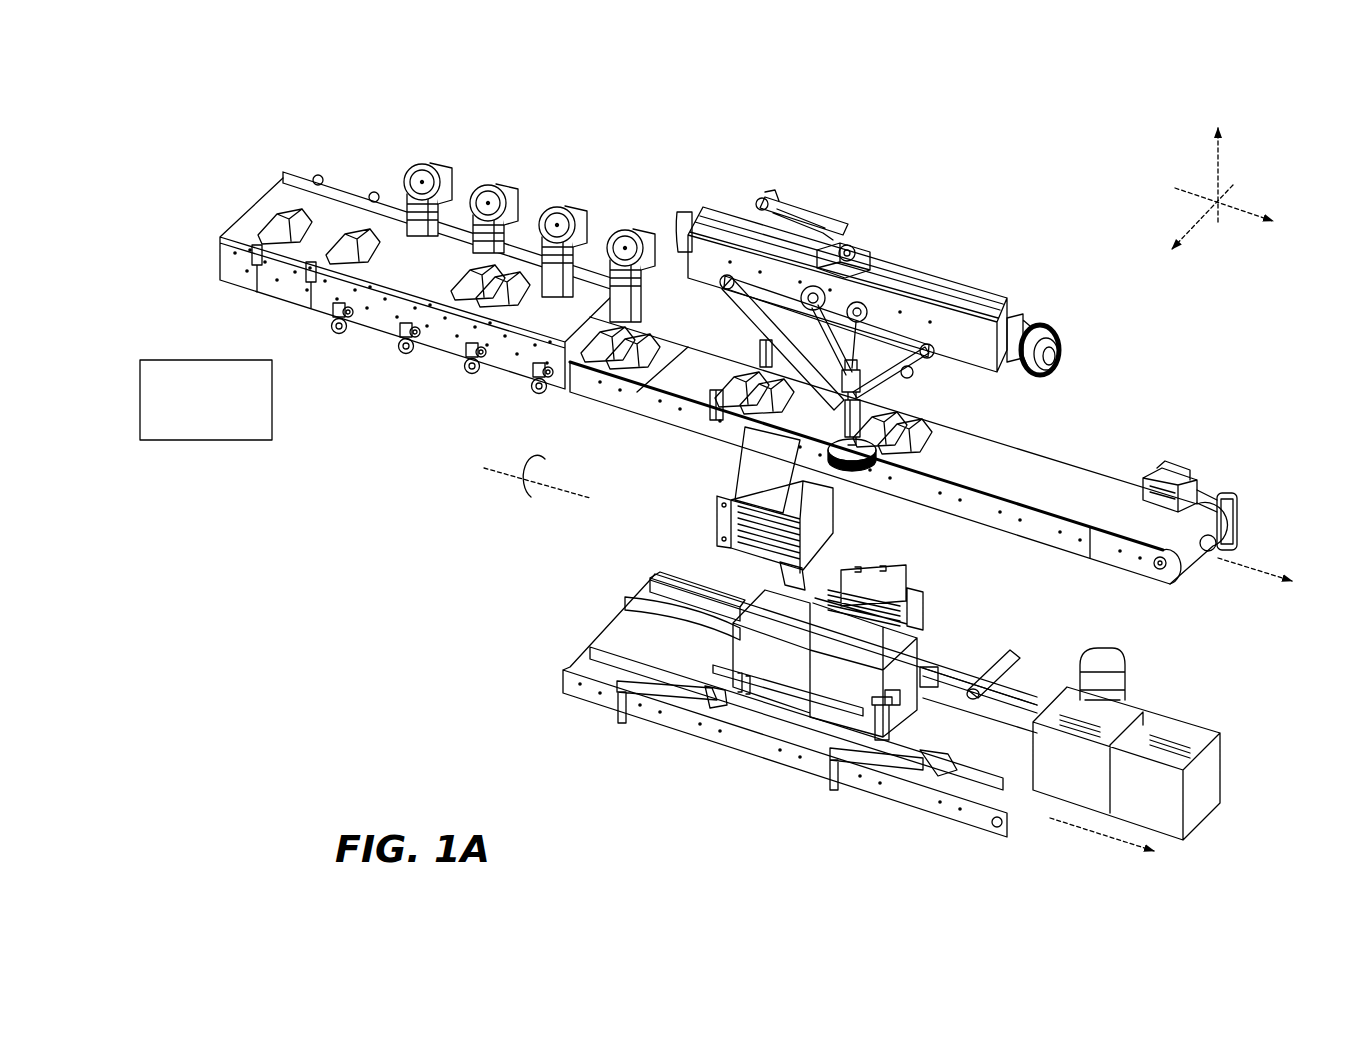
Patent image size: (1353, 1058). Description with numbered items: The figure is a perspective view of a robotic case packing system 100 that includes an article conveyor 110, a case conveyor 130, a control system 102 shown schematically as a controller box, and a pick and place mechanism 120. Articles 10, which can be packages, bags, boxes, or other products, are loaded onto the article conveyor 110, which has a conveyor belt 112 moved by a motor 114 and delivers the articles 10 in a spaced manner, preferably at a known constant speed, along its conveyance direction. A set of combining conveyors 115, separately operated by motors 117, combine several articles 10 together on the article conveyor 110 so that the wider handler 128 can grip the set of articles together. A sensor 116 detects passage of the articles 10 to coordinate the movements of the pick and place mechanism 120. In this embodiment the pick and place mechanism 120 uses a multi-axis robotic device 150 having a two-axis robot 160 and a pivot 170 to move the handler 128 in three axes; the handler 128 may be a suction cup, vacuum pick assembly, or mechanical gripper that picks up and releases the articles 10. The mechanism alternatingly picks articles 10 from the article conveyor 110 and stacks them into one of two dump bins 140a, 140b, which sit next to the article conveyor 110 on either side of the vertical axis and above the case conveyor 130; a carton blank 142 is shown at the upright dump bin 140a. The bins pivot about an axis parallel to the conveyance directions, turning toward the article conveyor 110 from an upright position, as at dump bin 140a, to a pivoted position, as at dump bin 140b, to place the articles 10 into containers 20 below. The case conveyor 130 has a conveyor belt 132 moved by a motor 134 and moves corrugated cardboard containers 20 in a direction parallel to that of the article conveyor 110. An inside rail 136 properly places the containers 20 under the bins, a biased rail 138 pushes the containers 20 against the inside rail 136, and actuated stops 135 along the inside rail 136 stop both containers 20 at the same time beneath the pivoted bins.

The robotic case packing system 100 is at (144, 170).
The articles 10 is at (281, 222).
The control system 102 is at (161, 358).
The combining conveyors 115 is at (534, 265).
The motors 117 is at (638, 233).
The article conveyor 110 is at (1152, 433).
The conveyor belt 112 is at (1060, 472).
The motor 114 is at (1193, 472).
The sensor 116 is at (701, 410).
The pick and place mechanism 120 is at (979, 234).
The multi-axis robotic device 150 is at (1018, 291).
The two-axis robot 160 is at (837, 226).
The pivot 170 is at (1065, 357).
The handler 128 is at (880, 478).
The carton blank 142 is at (736, 482).
The dump bin 140a is at (716, 522).
The dump bin 140b is at (919, 611).
The case conveyor 130 is at (507, 688).
The conveyor belt 132 is at (586, 662).
The motor 134 is at (1101, 650).
The actuated stops 135 is at (921, 676).
The inside rail 136 is at (627, 600).
The biased rail 138 is at (592, 650).
The containers 20 is at (1197, 830).